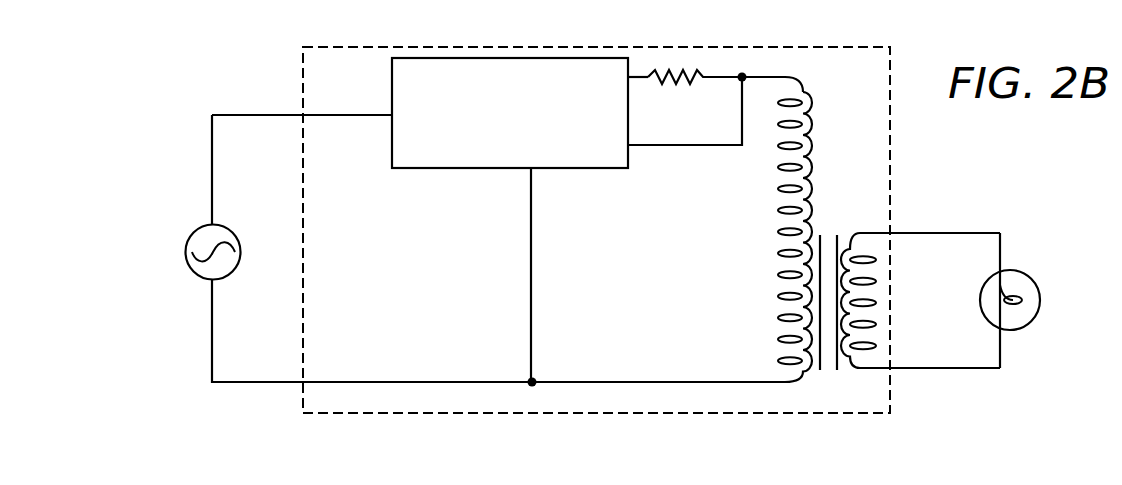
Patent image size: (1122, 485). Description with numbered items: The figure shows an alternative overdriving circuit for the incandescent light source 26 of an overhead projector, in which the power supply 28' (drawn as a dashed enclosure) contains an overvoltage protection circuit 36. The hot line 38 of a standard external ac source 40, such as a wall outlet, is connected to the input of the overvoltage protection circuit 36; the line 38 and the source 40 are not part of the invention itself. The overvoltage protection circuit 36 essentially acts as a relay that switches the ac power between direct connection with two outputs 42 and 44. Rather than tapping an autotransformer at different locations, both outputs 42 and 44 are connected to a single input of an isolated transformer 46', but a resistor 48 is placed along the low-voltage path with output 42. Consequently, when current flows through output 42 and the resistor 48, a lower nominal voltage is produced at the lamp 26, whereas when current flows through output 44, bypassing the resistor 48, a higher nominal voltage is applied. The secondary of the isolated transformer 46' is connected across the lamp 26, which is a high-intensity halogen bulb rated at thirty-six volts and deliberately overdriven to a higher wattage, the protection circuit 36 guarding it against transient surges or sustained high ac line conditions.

The light source 26 is at (1040, 313).
The power supply 28' is at (509, 230).
The overvoltage protection circuit 36 is at (593, 168).
The hot line 38 is at (281, 113).
The ac source 40 is at (190, 236).
The output 42 is at (641, 74).
The output 44 is at (680, 145).
The isolated transformer 46' is at (889, 237).
The resistor 48 is at (682, 75).